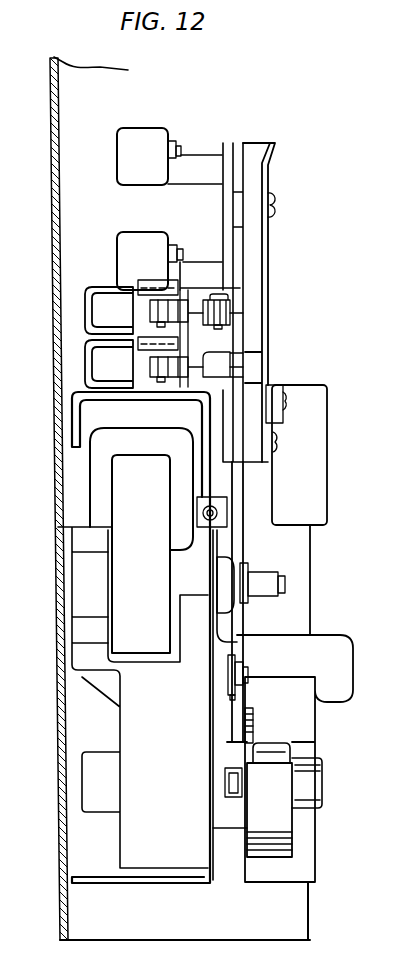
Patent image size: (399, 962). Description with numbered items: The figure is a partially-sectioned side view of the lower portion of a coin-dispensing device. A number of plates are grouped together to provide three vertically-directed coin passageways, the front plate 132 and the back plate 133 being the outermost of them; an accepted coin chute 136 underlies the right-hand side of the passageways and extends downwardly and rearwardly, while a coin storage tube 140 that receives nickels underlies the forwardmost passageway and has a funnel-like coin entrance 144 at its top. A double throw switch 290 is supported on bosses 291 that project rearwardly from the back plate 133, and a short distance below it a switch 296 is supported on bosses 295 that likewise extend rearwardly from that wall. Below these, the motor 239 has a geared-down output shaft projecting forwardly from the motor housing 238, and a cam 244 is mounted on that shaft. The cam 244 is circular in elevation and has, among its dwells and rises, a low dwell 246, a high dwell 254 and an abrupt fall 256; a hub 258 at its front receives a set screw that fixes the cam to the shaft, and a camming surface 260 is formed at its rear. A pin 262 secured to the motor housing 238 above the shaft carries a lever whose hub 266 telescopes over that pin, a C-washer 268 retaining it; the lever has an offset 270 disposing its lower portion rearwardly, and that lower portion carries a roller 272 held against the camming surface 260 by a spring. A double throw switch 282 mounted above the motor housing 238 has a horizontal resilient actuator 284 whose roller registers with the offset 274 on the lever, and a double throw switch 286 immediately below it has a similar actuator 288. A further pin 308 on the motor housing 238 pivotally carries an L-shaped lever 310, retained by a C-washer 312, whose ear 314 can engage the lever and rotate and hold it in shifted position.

The front plate 132 is at (271, 247).
The back plate 133 is at (223, 209).
The accepted coin chute 136 is at (397, 890).
The coin storage tube 140 is at (312, 563).
The funnel-like coin entrance 144 is at (318, 466).
The motor housing 238 is at (76, 398).
The motor 239 is at (95, 488).
The cam 244 is at (283, 845).
The low dwell 246 is at (255, 727).
The high dwell 254 is at (293, 827).
The abrupt fall 256 is at (282, 763).
The hub 258 is at (315, 787).
The camming surface 260 is at (233, 832).
The pin 262 is at (285, 585).
The hub 266 is at (265, 600).
The C-washer 268 is at (280, 597).
The offset 270 is at (258, 648).
The roller 272 is at (227, 798).
The offset 274 is at (230, 313).
The double throw switch 282 is at (105, 297).
The resilient actuator 284 is at (198, 314).
The double throw switch 286 is at (97, 360).
The resilient actuator 288 is at (197, 375).
The double throw switch 290 is at (143, 137).
The bosses 291 is at (201, 160).
The bosses 295 is at (202, 270).
The switch 296 is at (143, 240).
The pin 308 is at (250, 671).
The L-shaped lever 310 is at (345, 678).
The C-washer 312 is at (240, 690).
The ear 314 is at (211, 646).